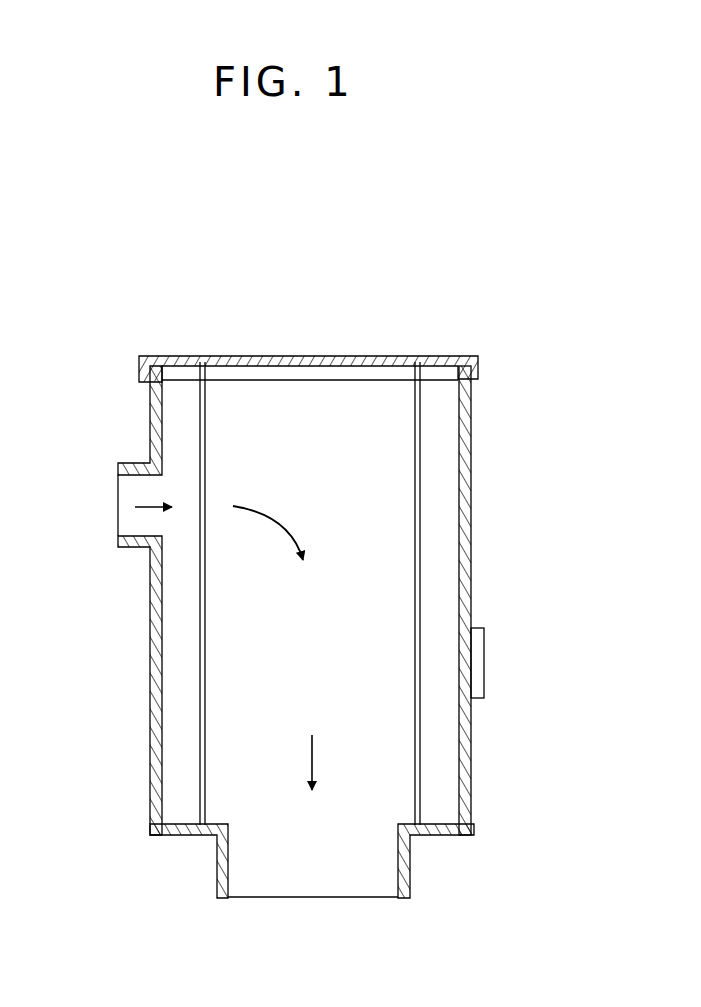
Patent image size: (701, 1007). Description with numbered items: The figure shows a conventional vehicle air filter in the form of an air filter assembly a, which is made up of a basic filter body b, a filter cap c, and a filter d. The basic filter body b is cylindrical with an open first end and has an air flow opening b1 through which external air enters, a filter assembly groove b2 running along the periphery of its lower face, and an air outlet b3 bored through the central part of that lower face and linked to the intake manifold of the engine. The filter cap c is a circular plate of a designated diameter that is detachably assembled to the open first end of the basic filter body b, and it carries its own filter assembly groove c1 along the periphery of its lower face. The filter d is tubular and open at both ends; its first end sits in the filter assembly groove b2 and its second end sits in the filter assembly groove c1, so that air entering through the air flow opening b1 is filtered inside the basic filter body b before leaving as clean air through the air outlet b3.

The air filter assembly a is at (137, 270).
The basic filter body b is at (471, 490).
The air flow opening b1 is at (120, 465).
The filter assembly groove b2 is at (200, 822).
The air outlet b3 is at (345, 832).
The filter cap c is at (350, 357).
The filter assembly groove c1 is at (222, 357).
The filter d is at (415, 430).